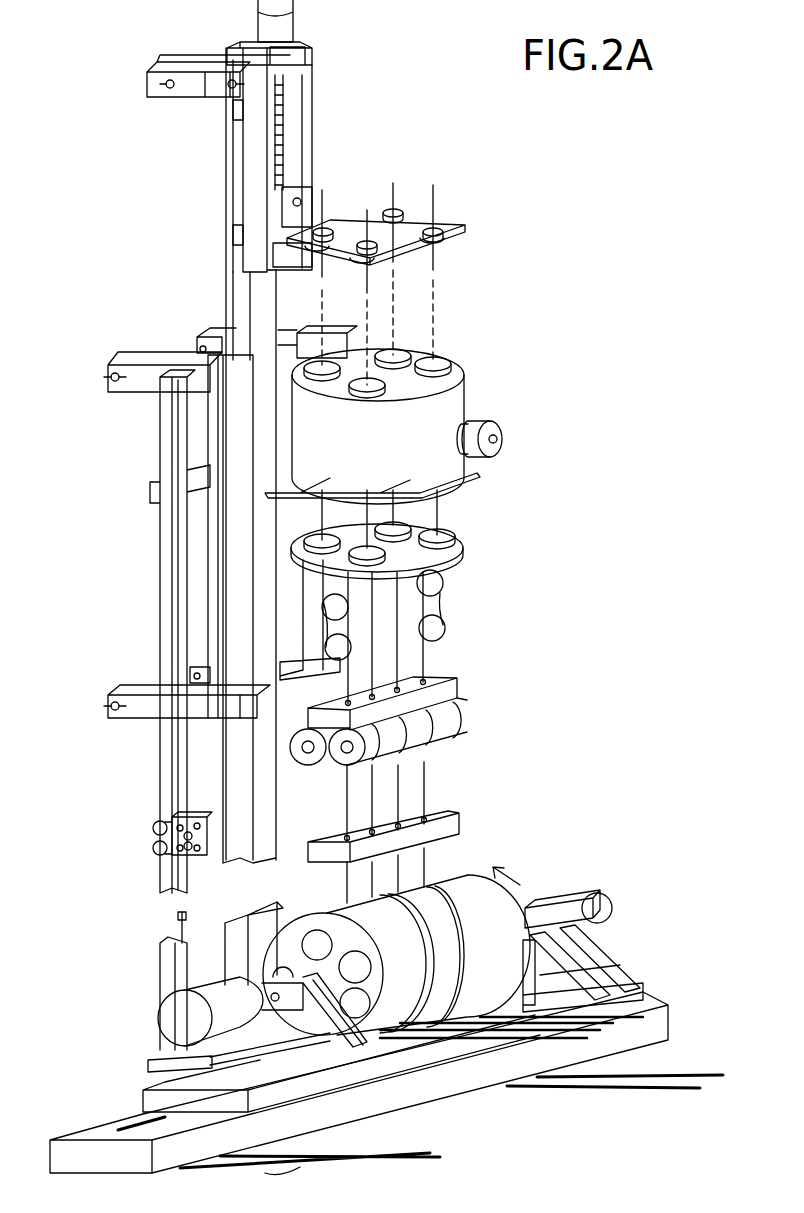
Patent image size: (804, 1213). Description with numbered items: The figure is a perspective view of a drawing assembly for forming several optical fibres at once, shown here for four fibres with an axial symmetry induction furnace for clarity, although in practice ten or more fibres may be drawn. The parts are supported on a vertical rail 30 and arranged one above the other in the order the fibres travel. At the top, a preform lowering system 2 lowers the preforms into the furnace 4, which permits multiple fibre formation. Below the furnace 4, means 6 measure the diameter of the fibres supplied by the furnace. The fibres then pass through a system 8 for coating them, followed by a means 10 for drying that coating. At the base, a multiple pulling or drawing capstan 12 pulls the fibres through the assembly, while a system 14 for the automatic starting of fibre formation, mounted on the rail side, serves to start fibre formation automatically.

The preform lowering system 2 is at (452, 232).
The furnace 4 is at (465, 400).
The means for measuring the diameter of the fibres 6 is at (465, 546).
The system for coating the fibres 8 is at (462, 722).
The means for drying said coating 10 is at (460, 818).
The multiple pulling or drawing capstan 12 is at (523, 895).
The system for the automatic starting of fibre formation 14 is at (150, 841).
The vertical rail 30 is at (238, 307).